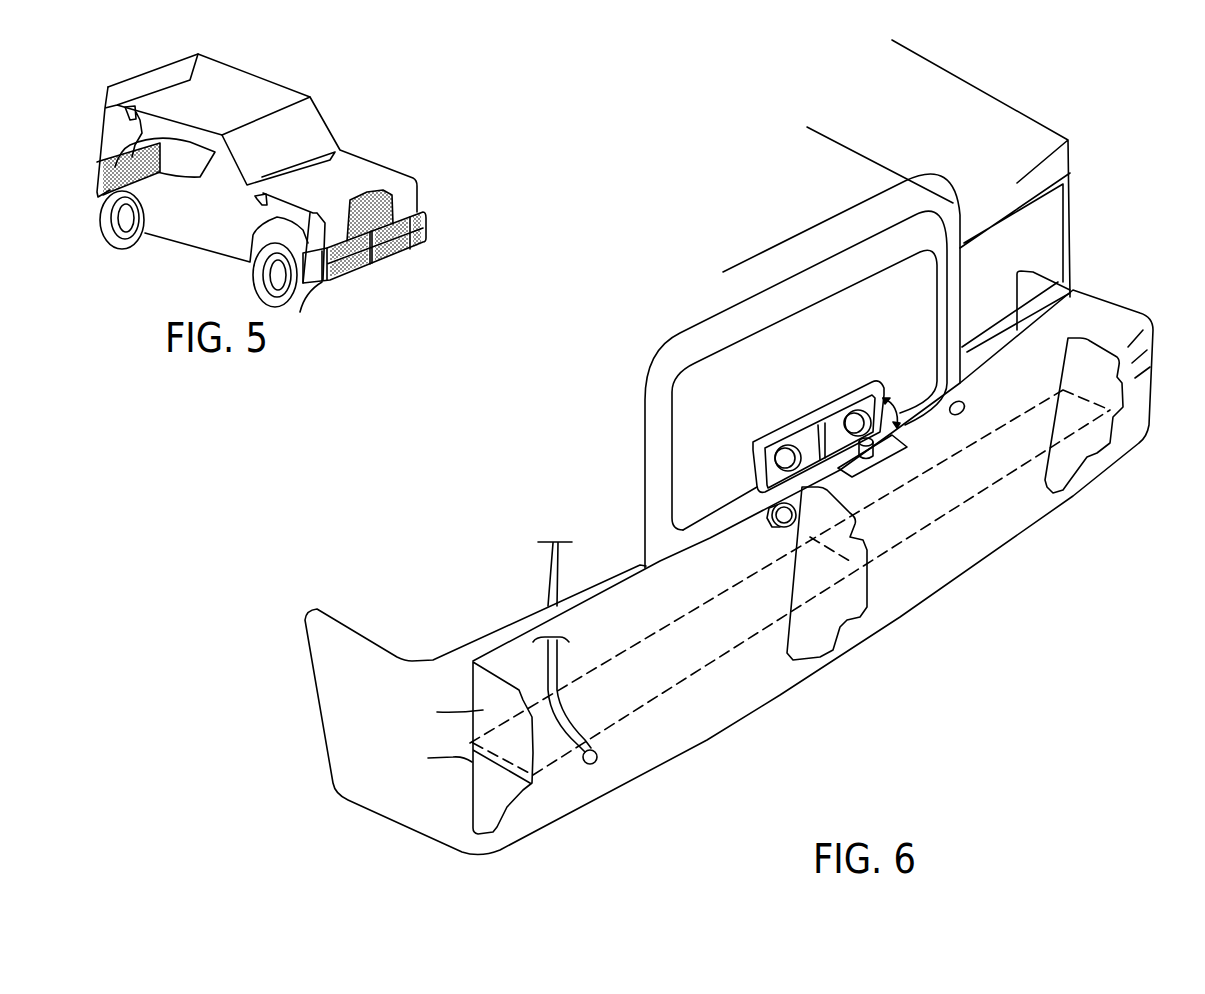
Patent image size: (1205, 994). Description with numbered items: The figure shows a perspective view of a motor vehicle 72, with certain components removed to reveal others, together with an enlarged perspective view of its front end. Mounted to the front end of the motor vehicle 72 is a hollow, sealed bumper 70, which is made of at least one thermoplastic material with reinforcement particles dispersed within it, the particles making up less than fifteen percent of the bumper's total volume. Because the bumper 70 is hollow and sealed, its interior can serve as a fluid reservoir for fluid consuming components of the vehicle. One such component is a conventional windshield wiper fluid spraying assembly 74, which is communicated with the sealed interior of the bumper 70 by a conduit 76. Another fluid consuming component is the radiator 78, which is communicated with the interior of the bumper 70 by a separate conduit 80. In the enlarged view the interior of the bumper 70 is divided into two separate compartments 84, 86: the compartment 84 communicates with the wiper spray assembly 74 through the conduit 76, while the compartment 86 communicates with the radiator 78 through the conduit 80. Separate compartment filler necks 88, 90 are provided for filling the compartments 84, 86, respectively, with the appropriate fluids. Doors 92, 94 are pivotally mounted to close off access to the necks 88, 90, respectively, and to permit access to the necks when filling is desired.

In FIG. 5, the hollow sealed front end bumper 70 is at (430, 212).
In FIG. 6, the hollow sealed front end bumper 70 is at (1133, 325).
In FIG. 5, the motor vehicle 72 is at (348, 147).
In FIG. 6, the motor vehicle 72 is at (1076, 133).
In FIG. 5, the windshield wiper fluid spraying assembly 74 is at (240, 204).
In FIG. 5, the conduit 76 is at (307, 309).
In FIG. 6, the conduit 76 is at (557, 685).
In FIG. 5, the radiator 78 is at (373, 230).
In FIG. 5, the conduit 80 is at (383, 190).
In FIG. 6, the conduit 80 is at (935, 228).
In FIG. 6, the compartment 84 is at (623, 738).
In FIG. 6, the compartment 86 is at (1018, 500).
In FIG. 6, the compartment filler neck 88 is at (783, 473).
In FIG. 6, the compartment filler neck 90 is at (840, 435).
In FIG. 6, the door 92 is at (805, 437).
In FIG. 6, the door 94 is at (883, 432).